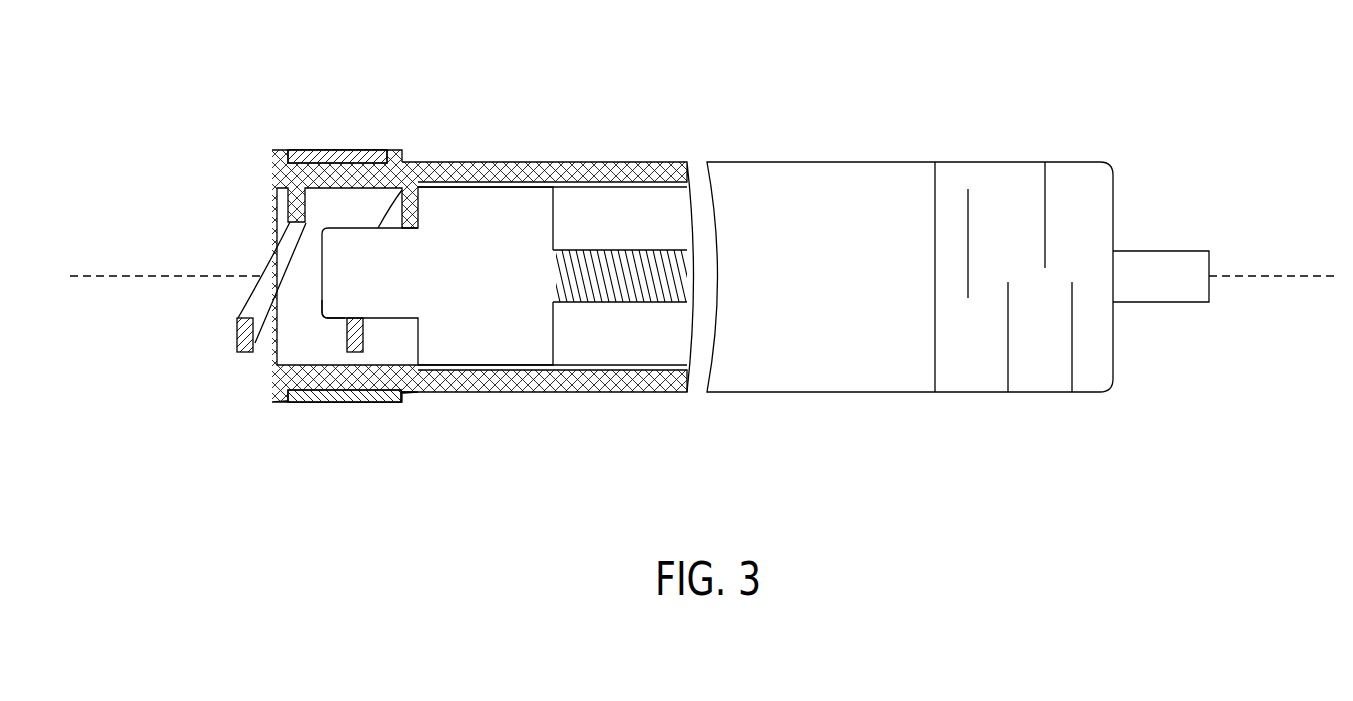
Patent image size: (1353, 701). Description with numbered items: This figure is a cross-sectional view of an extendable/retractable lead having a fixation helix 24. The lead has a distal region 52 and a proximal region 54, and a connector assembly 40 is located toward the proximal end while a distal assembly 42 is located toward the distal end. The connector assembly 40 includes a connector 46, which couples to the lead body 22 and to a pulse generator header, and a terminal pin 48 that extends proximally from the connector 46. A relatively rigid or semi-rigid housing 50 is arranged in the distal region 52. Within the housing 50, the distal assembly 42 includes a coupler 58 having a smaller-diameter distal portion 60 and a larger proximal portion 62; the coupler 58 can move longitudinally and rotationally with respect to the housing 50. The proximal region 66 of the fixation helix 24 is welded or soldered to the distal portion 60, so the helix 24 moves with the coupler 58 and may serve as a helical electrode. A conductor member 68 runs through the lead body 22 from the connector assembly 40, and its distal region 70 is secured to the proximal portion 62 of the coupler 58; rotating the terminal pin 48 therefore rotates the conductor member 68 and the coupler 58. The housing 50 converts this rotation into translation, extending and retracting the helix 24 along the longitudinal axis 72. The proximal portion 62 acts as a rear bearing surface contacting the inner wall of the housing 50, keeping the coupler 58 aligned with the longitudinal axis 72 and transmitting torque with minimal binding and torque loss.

The lead body 22 is at (958, 259).
The fixation helix 24 is at (257, 308).
The connector assembly 40 is at (958, 237).
The distal assembly 42 is at (322, 231).
The connector 46 is at (1047, 377).
The terminal pin 48 is at (1149, 289).
The housing 50 is at (632, 162).
The distal region 52 is at (285, 380).
The proximal region 54 is at (582, 392).
The coupler 58 is at (458, 364).
The distal portion 60 is at (342, 303).
The proximal portion 62 is at (545, 370).
The proximal region 66 is at (372, 320).
The conductor member 68 is at (616, 256).
The distal region 70 is at (577, 192).
The longitudinal axis 72 is at (112, 273).